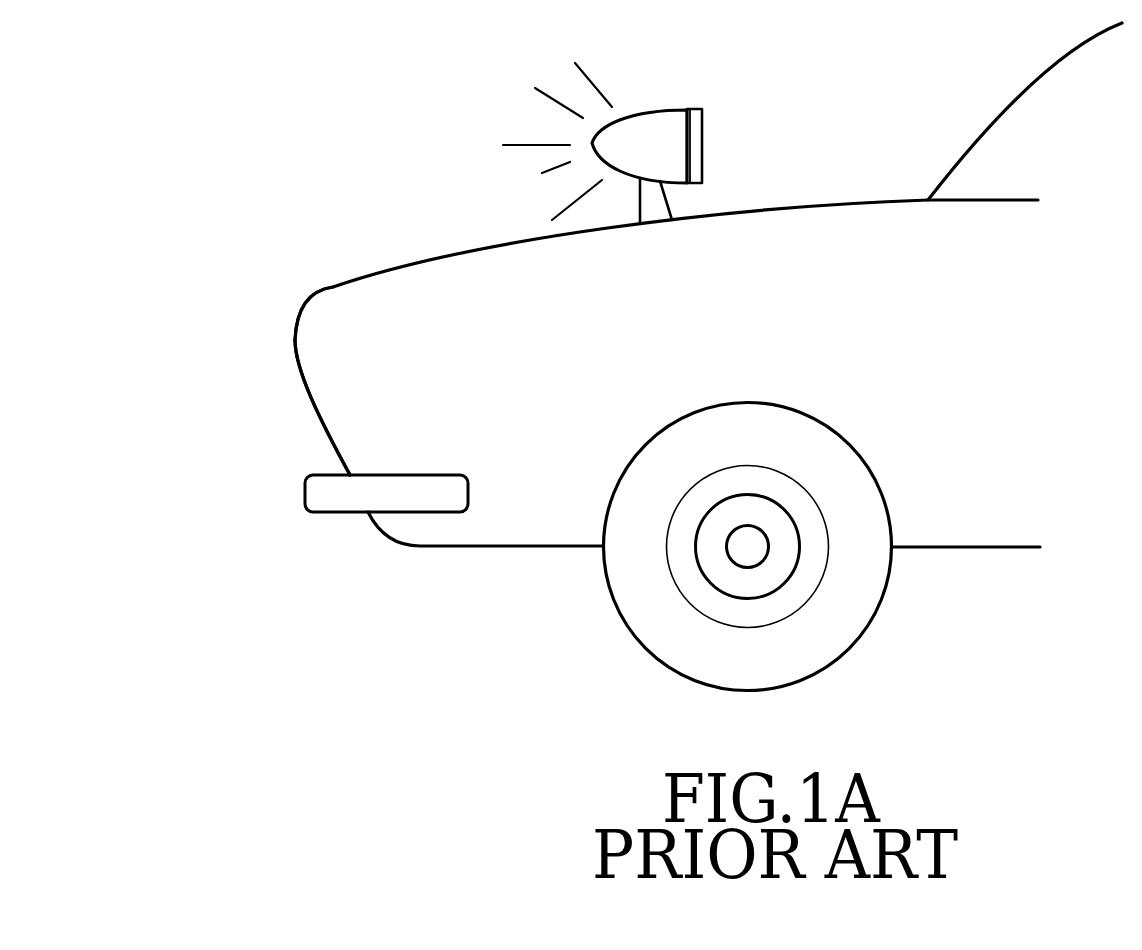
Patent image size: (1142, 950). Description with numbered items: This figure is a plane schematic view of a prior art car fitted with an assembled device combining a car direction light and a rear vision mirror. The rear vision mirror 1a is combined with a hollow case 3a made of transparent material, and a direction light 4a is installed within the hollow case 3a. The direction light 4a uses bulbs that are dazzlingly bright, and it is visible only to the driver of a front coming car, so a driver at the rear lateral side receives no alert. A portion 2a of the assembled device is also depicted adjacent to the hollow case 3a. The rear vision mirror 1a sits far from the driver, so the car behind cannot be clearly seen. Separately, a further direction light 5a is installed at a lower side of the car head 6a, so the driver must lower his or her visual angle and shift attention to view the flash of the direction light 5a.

The rear vision mirror 1a is at (697, 129).
The lamp body 2a is at (667, 123).
The hollow case 3a is at (692, 113).
The direction light 4a is at (592, 142).
The direction light 5a is at (305, 497).
The car head 6a is at (293, 343).